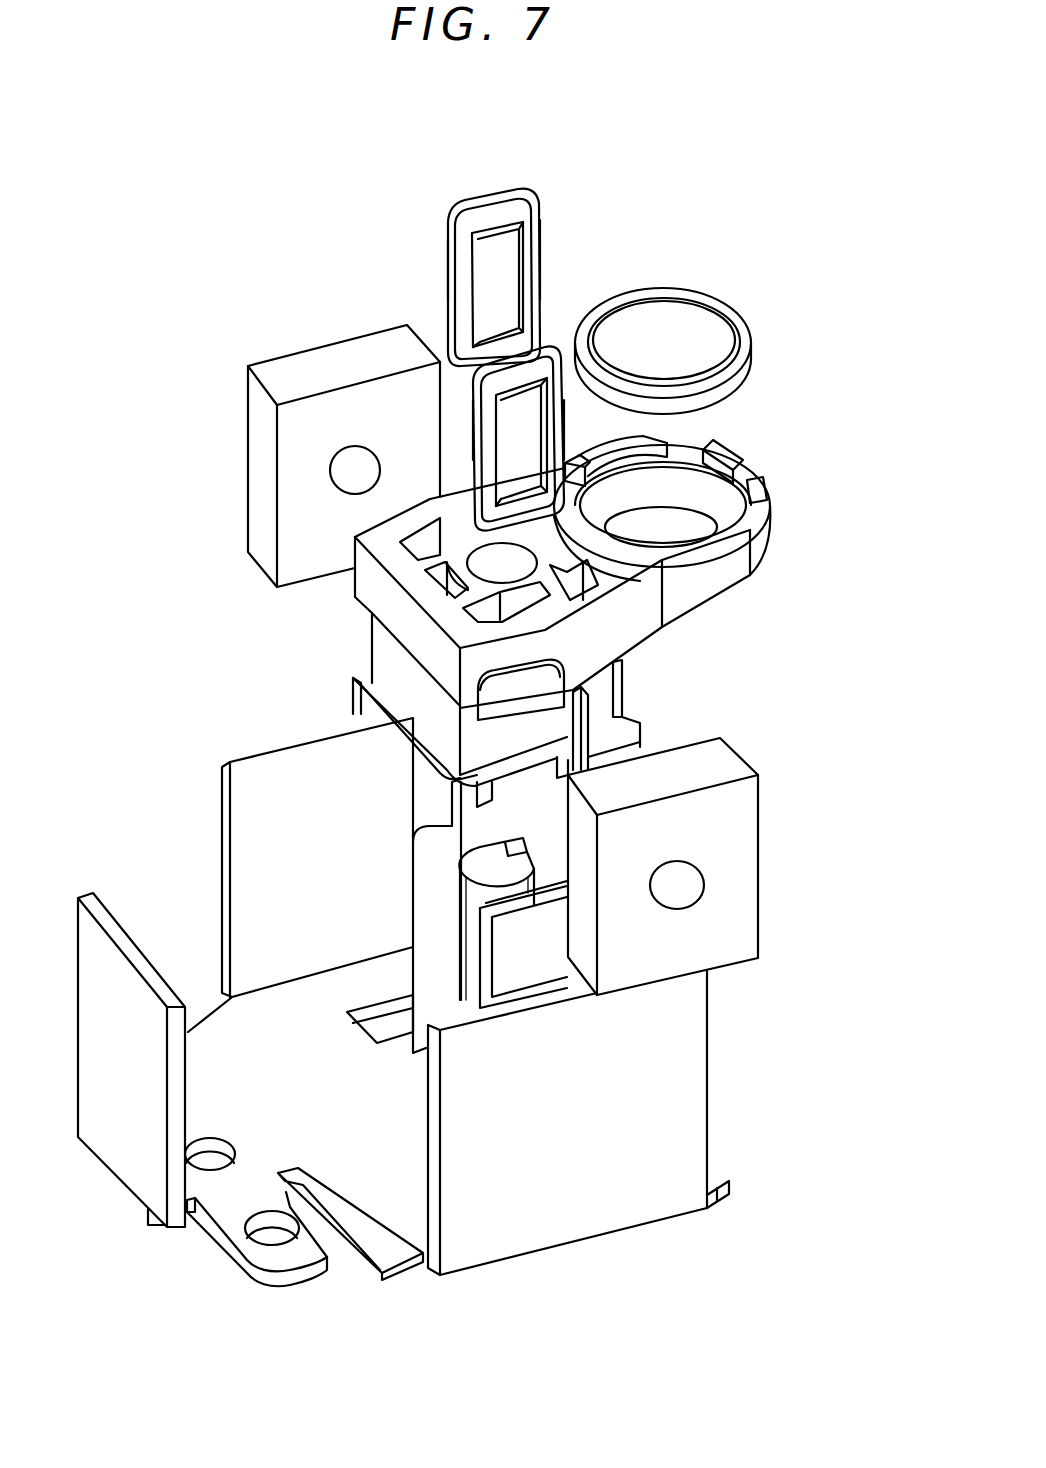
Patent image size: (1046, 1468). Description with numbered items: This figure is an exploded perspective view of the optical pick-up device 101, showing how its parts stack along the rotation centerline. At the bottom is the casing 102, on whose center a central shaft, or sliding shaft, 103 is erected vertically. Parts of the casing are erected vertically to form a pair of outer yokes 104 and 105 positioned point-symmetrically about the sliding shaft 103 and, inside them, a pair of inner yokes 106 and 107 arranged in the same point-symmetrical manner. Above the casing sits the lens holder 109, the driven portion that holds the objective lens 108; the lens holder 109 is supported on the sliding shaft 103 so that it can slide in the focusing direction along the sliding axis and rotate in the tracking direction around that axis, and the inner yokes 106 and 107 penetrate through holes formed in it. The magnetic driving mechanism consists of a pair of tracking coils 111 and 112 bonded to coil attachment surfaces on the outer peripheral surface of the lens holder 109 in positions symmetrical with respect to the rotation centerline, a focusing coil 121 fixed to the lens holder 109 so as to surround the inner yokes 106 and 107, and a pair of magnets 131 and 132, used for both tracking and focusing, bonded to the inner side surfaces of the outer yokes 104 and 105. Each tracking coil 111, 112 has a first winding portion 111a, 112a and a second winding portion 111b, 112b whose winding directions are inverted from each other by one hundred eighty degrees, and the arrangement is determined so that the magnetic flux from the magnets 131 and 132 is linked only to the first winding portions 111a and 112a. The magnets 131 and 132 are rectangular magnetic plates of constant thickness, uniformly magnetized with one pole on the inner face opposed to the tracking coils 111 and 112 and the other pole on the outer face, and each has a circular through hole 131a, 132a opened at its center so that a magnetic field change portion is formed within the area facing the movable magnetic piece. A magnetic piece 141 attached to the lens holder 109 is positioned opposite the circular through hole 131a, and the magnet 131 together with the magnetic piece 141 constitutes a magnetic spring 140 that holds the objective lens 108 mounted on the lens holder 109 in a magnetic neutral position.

The optical pick-up device 101 is at (178, 337).
The casing 102 is at (383, 1210).
The central shaft (sliding shaft) 103 is at (463, 925).
The outer yoke 104 is at (585, 1187).
The outer yoke 105 is at (247, 832).
The inner yoke 106 is at (505, 958).
The inner yoke 107 is at (430, 855).
The objective lens 108 is at (670, 323).
The lens holder 109 is at (703, 583).
The tracking coil 111 is at (550, 352).
The first winding portion 111a is at (560, 436).
The second winding portion 111b is at (487, 428).
The tracking coil 112 is at (496, 188).
The first winding portion 112a is at (443, 250).
The second winding portion 112b is at (540, 242).
The focusing coil 121 is at (387, 660).
The magnet 131 is at (723, 810).
The circular through hole 131a is at (677, 897).
The magnet 132 is at (332, 353).
The circular through hole 132a is at (337, 477).
The magnetic spring 140 is at (853, 718).
The magnetic piece 141 is at (580, 720).